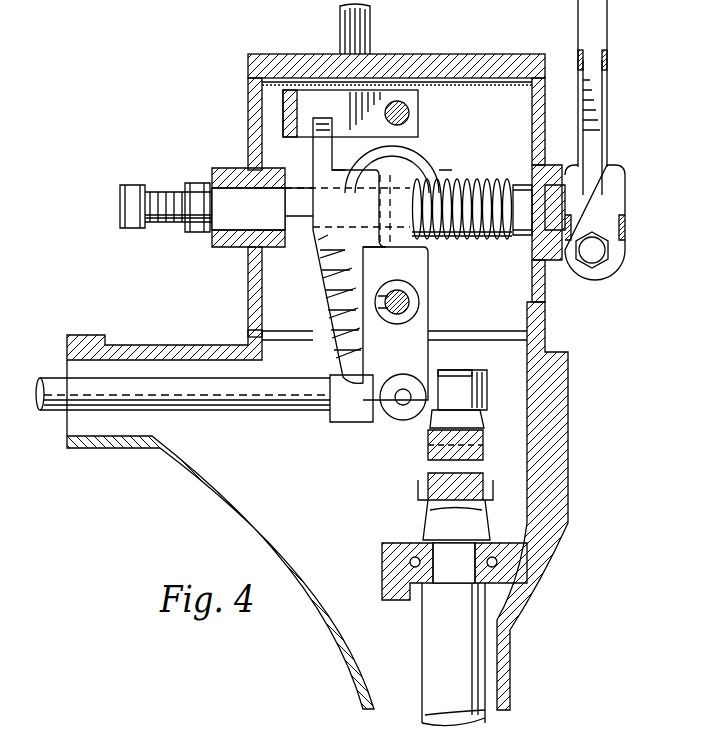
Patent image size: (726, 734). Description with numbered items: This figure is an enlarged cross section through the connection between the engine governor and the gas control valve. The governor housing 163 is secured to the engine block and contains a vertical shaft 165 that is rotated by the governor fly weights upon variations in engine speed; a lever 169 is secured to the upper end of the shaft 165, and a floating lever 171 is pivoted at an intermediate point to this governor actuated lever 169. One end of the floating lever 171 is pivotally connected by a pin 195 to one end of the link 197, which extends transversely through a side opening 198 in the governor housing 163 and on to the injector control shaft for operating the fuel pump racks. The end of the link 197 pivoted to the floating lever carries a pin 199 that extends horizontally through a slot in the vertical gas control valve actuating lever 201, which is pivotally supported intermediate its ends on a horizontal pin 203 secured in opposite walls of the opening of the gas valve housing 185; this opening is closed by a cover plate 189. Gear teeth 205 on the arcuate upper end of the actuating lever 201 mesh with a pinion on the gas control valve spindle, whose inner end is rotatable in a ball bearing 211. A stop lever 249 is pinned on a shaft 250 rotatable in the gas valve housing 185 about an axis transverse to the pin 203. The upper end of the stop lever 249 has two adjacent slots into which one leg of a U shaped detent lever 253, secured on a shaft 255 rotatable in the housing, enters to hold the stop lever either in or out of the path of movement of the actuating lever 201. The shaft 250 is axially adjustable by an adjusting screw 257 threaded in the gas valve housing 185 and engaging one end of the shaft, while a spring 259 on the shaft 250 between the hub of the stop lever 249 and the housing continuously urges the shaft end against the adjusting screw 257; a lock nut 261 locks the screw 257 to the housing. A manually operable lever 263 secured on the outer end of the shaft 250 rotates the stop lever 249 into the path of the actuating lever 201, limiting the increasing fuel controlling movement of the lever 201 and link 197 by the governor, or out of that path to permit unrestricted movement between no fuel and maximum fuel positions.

The governor housing 163 is at (510, 662).
The vertical shaft 165 is at (445, 640).
The lever 169 is at (435, 487).
The floating lever 171 is at (432, 450).
The gas valve housing 185 is at (250, 287).
The cover plate 189 is at (268, 62).
The pin 195 is at (478, 373).
The link 197 is at (56, 410).
The side opening 198 is at (68, 368).
The pin 199 is at (403, 400).
The gas control valve actuating lever 201 is at (430, 368).
The horizontal pin 203 is at (415, 300).
The gear teeth 205 is at (428, 238).
The ball bearing 211 is at (420, 181).
The stop lever 249 is at (340, 282).
The shaft 250 is at (297, 200).
The detent lever 253 is at (402, 133).
The shaft 255 is at (410, 116).
The adjusting screw 257 is at (154, 200).
The spring 259 is at (527, 240).
The lock nut 261 is at (197, 233).
The manually operable lever 263 is at (598, 135).